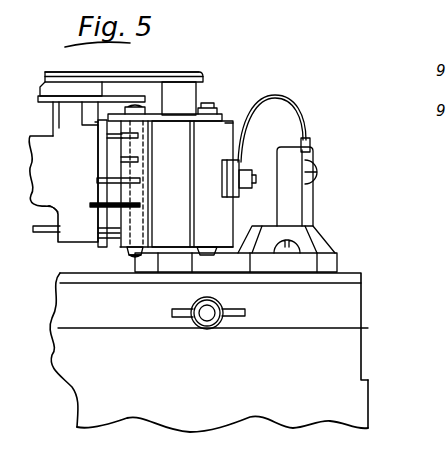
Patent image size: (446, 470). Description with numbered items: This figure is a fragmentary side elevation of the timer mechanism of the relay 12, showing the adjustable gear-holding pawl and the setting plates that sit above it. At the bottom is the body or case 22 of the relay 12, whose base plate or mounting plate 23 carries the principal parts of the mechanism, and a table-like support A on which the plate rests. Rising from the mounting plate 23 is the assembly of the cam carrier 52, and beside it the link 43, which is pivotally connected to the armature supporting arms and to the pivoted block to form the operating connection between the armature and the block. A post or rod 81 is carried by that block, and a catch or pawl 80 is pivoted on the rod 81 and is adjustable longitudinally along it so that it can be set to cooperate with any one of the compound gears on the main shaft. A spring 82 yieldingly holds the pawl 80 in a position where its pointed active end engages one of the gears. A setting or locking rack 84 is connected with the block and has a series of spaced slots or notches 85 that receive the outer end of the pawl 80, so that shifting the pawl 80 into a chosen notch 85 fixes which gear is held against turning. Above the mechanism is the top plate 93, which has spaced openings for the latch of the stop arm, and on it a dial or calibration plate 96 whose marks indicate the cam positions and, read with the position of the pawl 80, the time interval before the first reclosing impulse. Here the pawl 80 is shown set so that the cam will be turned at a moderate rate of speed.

The top plate 93 is at (112, 80).
The dial or calibration plate 96 is at (153, 78).
The relay 12 is at (210, 78).
The cam carrier 52 is at (70, 113).
The link 43 is at (63, 183).
The slots or notches 85 is at (128, 136).
The catch or pawl 80 is at (97, 180).
The spring 82 is at (120, 192).
The setting or locking rack 84 is at (133, 225).
The post or rod 81 is at (110, 147).
The base plate or mounting plate 23 is at (347, 275).
The table A is at (362, 303).
The body or case 22 is at (222, 400).